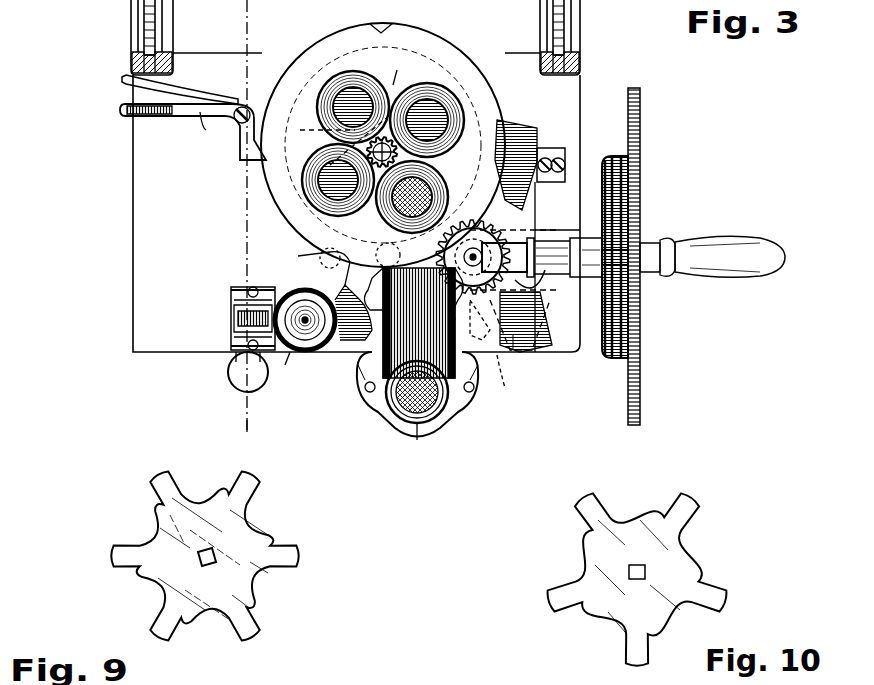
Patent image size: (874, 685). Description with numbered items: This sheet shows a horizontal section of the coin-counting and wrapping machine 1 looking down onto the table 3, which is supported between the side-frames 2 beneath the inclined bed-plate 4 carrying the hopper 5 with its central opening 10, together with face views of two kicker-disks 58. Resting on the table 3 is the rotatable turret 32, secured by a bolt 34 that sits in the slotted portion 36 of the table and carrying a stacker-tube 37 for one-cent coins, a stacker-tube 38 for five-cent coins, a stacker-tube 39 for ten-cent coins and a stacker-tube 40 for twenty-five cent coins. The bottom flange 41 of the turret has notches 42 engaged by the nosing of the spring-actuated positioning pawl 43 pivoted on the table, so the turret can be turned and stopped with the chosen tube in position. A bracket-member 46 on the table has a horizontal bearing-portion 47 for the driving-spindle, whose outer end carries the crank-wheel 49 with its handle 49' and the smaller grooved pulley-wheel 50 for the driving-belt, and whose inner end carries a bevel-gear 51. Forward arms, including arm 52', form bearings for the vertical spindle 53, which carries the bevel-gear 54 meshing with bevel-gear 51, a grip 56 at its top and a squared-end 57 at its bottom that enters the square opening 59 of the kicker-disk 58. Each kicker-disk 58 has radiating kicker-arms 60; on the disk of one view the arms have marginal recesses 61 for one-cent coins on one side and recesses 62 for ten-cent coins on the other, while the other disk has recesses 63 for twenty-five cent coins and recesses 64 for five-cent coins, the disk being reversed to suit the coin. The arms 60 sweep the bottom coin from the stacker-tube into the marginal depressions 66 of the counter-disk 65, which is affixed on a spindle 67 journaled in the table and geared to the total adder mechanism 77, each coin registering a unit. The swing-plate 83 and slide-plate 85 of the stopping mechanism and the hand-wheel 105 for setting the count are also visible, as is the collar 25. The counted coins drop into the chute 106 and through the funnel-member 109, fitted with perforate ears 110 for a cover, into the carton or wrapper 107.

In FIG. 3, the coin-counting and wrapping machine 1 is at (480, 320).
In FIG. 9, the coin-counting and wrapping machine 1 is at (231, 611).
In FIG. 3, the side-frames 2 is at (138, 20).
In FIG. 3, the table 3 is at (228, 62).
In FIG. 3, the bed-plate 4 is at (259, 431).
In FIG. 3, the hopper 5 is at (288, 219).
In FIG. 3, the opening 10 is at (392, 84).
In FIG. 3, the collar 25 is at (483, 83).
In FIG. 10, the collar 25 is at (631, 617).
In FIG. 3, the turret 32 is at (401, 62).
In FIG. 3, the bolt 34 is at (396, 152).
In FIG. 3, the slotted portion 36 is at (334, 140).
In FIG. 3, the stacker-tube 37 is at (430, 197).
In FIG. 3, the stacker-tube 38 is at (310, 174).
In FIG. 3, the stacker-tube 39 is at (330, 97).
In FIG. 3, the stacker-tube 40 is at (438, 92).
In FIG. 3, the flange 41 is at (432, 40).
In FIG. 3, the notches 42 is at (382, 28).
In FIG. 3, the positioning pawl 43 is at (240, 146).
In FIG. 3, the bracket-member 46 is at (604, 222).
In FIG. 3, the bearing-portion 47 is at (585, 267).
In FIG. 3, the crank-wheel 49 is at (656, 256).
In FIG. 3, the handle 49' is at (712, 244).
In FIG. 3, the pulley-wheel 50 is at (618, 326).
In FIG. 3, the bevel-gear 51 is at (514, 352).
In FIG. 3, the arm 52' is at (504, 257).
In FIG. 3, the vertical spindle 53 is at (576, 152).
In FIG. 3, the bevel-gear 54 is at (478, 213).
In FIG. 3, the handle-portion 56 is at (562, 222).
In FIG. 3, the squared-end 57 is at (502, 390).
In FIG. 3, the kicker-disk 58 is at (545, 140).
In FIG. 9, the kicker-disk 58 is at (262, 532).
In FIG. 10, the kicker-disk 58 is at (683, 584).
In FIG. 9, the square opening 59 is at (217, 558).
In FIG. 10, the square opening 59 is at (645, 574).
In FIG. 3, the kicker-arms 60 is at (366, 354).
In FIG. 9, the kicker-arms 60 is at (248, 637).
In FIG. 10, the kicker-arms 60 is at (636, 666).
In FIG. 9, the marginal recesses 61 is at (258, 614).
In FIG. 9, the marginal recesses 62 is at (236, 640).
In FIG. 10, the marginal recesses 63 is at (648, 630).
In FIG. 10, the marginal recesses 64 is at (620, 640).
In FIG. 3, the counter-disk 65 is at (298, 256).
In FIG. 3, the marginal depressions 66 is at (330, 265).
In FIG. 3, the spindle 67 is at (356, 247).
In FIG. 3, the total adder mechanism 77 is at (233, 318).
In FIG. 3, the swing-plate 83 is at (232, 362).
In FIG. 3, the slide-plate 85 is at (268, 378).
In FIG. 3, the hand-wheel 105 is at (292, 369).
In FIG. 3, the chute 106 is at (362, 378).
In FIG. 3, the carton or wrapper 107 is at (405, 420).
In FIG. 3, the funnel-member 109 is at (420, 440).
In FIG. 3, the perforate ears 110 is at (372, 398).